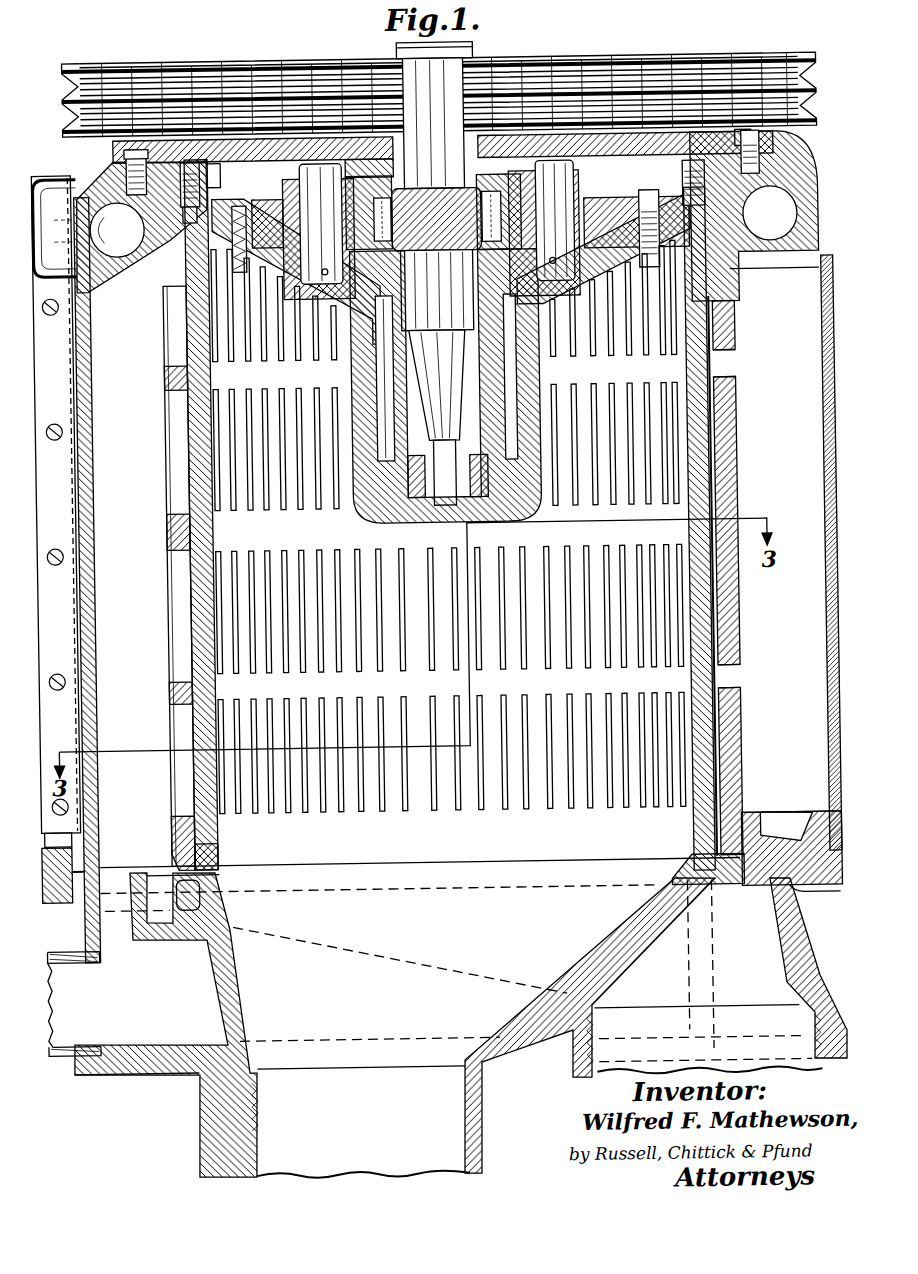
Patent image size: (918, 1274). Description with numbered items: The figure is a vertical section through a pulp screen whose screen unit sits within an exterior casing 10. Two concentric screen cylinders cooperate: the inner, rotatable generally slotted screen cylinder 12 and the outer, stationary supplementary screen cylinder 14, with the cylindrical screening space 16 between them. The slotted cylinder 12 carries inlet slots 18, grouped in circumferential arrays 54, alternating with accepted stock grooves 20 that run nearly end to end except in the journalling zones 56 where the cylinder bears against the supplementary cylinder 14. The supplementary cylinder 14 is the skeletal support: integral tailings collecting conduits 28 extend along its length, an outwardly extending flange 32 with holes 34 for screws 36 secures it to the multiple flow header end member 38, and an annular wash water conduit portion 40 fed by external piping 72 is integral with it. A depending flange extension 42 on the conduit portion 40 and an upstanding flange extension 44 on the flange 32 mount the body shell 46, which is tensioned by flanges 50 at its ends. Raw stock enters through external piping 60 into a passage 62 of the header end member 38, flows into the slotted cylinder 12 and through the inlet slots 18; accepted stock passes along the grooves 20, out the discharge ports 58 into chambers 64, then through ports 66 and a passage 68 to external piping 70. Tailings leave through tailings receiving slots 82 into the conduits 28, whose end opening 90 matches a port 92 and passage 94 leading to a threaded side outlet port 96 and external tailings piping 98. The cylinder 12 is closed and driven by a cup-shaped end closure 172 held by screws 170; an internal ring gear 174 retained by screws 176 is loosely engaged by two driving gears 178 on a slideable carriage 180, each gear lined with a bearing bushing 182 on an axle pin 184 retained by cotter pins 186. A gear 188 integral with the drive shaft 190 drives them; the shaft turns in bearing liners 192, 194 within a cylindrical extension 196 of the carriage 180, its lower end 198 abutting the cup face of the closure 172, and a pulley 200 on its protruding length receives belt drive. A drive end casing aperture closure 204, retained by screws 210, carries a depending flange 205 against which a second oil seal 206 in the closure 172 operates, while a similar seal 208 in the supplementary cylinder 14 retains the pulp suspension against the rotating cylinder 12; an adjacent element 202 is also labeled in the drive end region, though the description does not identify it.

The exterior casing 10 is at (801, 181).
The generally slotted cylindrical screen element 12 is at (714, 448).
The supplementary cylindrical screen element 14 is at (739, 386).
The cylindrical screening space 16 is at (738, 478).
The inlet slots 18 is at (656, 344).
The accepted stock grooves 20 is at (739, 505).
The tailings collecting conduits 28 is at (164, 515).
The outwardly extending flange 32 is at (95, 840).
The holes 34 is at (70, 866).
The screws 36 is at (93, 827).
The multiple flow header end member 38 is at (49, 887).
The annular wash water conduit portion 40 is at (157, 262).
The depending flange extension 42 is at (814, 275).
The upstanding flange extension 44 is at (808, 817).
The body shell 46 is at (826, 602).
The flange 50 is at (57, 492).
The arrays of inlet slots 54 is at (334, 546).
The journalling zones 56 is at (779, 182).
The accepted stock discharge ports 58 is at (737, 371).
The external piping 60 is at (362, 1122).
The passage 62 is at (408, 969).
The chambers 64 is at (785, 719).
The ports 66 is at (796, 891).
The passage 68 is at (654, 1024).
The external piping 70 is at (708, 1039).
The external piping 72 is at (58, 186).
The tailings receiving slots 82 is at (168, 313).
The opening 90 is at (120, 860).
The port 92 is at (213, 877).
The passage 94 is at (197, 909).
The threaded side outlet port 96 is at (84, 1070).
The external tailings piping 98 is at (53, 1028).
The screws 170 is at (197, 205).
The cup-shaped end closure 172 is at (406, 523).
The internal ring gear 174 is at (653, 245).
The screws 176 is at (705, 185).
The driving gears 178 is at (528, 195).
The slideable carriage 180 is at (498, 200).
The bearing bushing 182 is at (561, 236).
The axle pin 184 is at (655, 263).
The cotter pins 186 is at (559, 262).
The gear 188 is at (474, 232).
The drive shaft 190 is at (450, 56).
The bearing liner 192 is at (520, 507).
The bearing liner 194 is at (420, 346).
The cylindrical extension 196 is at (399, 395).
The lower end 198 is at (447, 507).
The pulley 200 is at (80, 63).
The bearing housing 202 is at (396, 168).
The drive end casing aperture closure 204 is at (310, 147).
The depending flange 205 is at (250, 172).
The second oil seal 206 is at (245, 205).
The seal 208 is at (198, 163).
The screws 210 is at (141, 150).